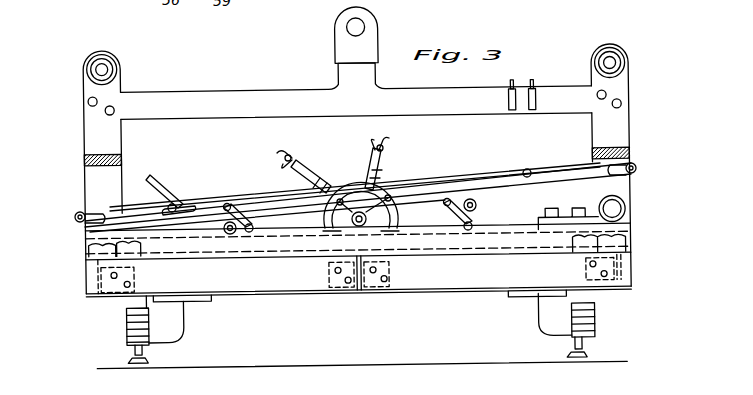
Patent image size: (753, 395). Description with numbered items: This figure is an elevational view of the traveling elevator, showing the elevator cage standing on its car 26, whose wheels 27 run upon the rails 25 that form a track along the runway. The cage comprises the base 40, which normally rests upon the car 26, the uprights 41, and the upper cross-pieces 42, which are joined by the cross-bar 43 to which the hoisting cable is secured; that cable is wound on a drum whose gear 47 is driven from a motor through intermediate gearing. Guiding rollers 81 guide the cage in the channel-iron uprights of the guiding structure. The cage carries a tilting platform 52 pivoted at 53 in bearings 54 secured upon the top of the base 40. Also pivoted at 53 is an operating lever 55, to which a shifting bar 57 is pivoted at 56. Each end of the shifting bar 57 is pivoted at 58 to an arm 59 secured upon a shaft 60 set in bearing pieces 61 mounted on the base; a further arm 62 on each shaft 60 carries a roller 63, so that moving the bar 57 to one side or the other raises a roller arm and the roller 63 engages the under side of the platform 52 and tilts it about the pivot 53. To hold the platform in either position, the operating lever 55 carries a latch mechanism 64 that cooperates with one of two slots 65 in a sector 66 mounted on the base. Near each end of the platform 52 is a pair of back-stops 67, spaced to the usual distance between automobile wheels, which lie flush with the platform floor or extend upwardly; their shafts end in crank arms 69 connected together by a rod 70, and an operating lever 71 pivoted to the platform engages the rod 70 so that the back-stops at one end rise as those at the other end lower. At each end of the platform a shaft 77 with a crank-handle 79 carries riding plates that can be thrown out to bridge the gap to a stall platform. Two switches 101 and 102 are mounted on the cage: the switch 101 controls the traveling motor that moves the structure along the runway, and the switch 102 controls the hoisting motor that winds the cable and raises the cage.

The rails 25 is at (148, 360).
The car 26 is at (93, 302).
The wheels 27 is at (127, 339).
The base 40 is at (91, 245).
The uprights 41 is at (96, 145).
The upper cross-pieces 42 is at (261, 89).
The cross-bar 43 is at (366, 24).
The gear 47 is at (621, 124).
The tilting platform 52 is at (557, 182).
The pivot 53 is at (364, 223).
The bearings 54 is at (345, 226).
The operating lever 55 is at (290, 158).
The pivot 56 is at (354, 180).
The shifting bar 57 is at (424, 199).
The pivot 58 is at (225, 203).
The arm 59 is at (242, 216).
The shaft 60 is at (250, 232).
The bearing pieces 61 is at (256, 228).
The arm 62 is at (232, 234).
The roller 63 is at (226, 214).
The latch mechanism 64 is at (315, 172).
The slots 65 is at (322, 198).
The sector 66 is at (390, 180).
The back-stops 67 is at (166, 178).
The crank arm 69 is at (168, 206).
The rod 70 is at (182, 205).
The operating lever 71 is at (380, 144).
The shaft 77 is at (74, 217).
The crank-handle 79 is at (88, 223).
The guiding rollers 81 is at (626, 60).
The switch 101 is at (536, 88).
The switch 102 is at (514, 80).